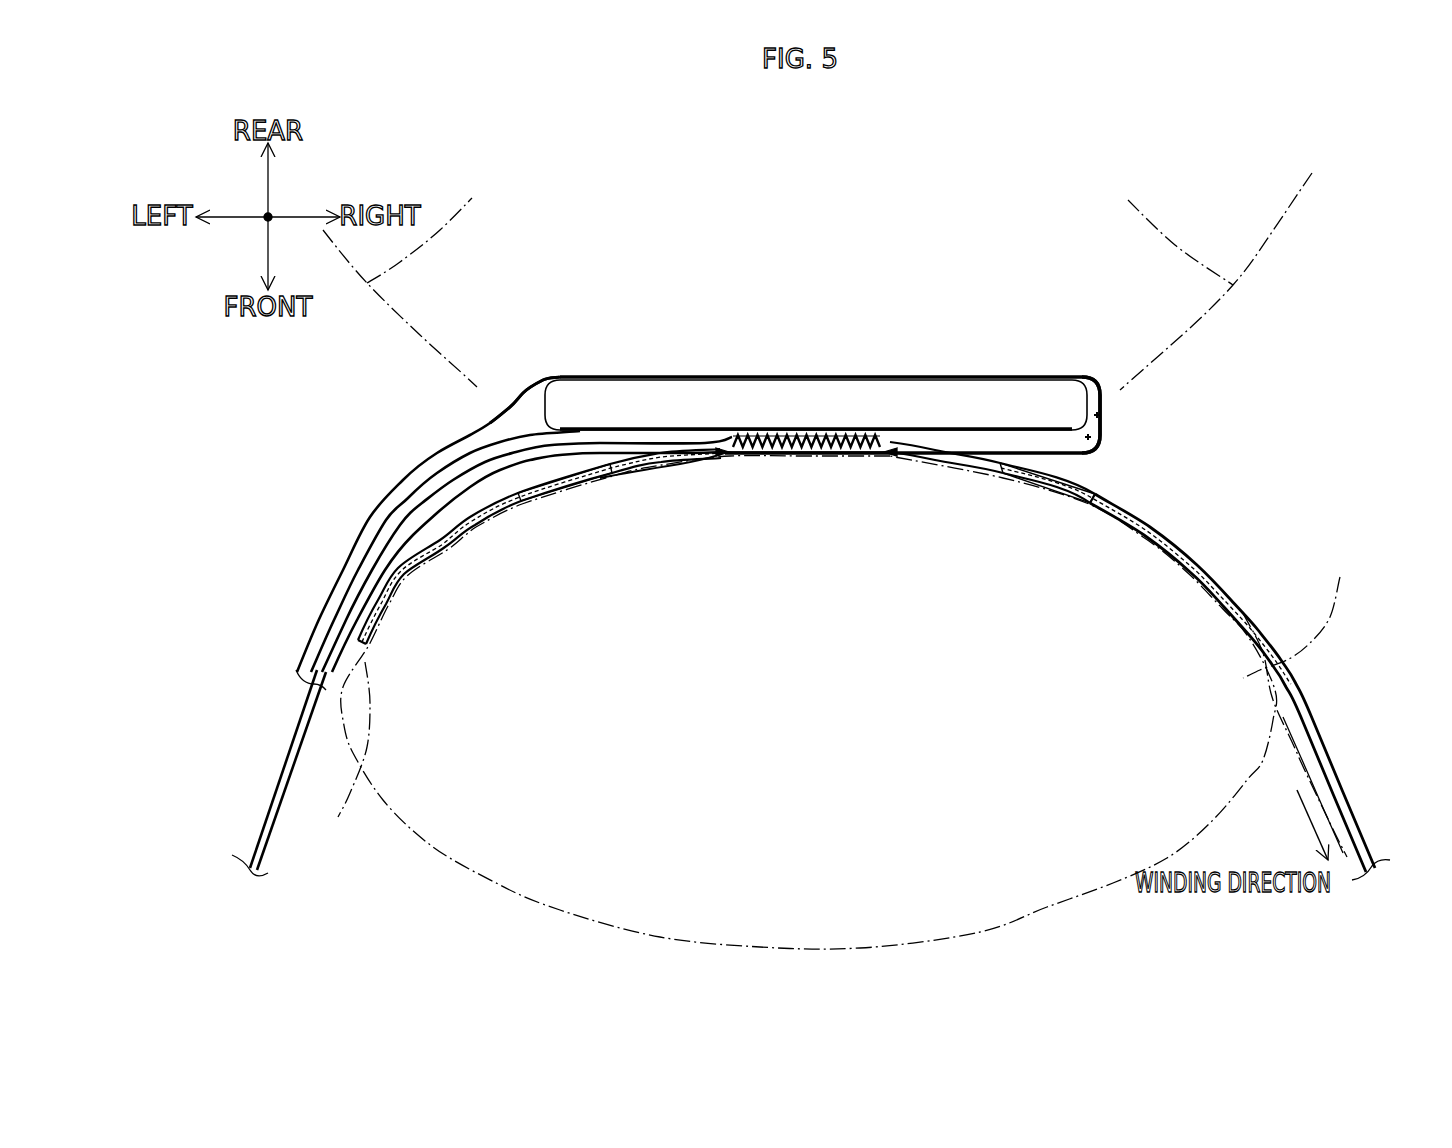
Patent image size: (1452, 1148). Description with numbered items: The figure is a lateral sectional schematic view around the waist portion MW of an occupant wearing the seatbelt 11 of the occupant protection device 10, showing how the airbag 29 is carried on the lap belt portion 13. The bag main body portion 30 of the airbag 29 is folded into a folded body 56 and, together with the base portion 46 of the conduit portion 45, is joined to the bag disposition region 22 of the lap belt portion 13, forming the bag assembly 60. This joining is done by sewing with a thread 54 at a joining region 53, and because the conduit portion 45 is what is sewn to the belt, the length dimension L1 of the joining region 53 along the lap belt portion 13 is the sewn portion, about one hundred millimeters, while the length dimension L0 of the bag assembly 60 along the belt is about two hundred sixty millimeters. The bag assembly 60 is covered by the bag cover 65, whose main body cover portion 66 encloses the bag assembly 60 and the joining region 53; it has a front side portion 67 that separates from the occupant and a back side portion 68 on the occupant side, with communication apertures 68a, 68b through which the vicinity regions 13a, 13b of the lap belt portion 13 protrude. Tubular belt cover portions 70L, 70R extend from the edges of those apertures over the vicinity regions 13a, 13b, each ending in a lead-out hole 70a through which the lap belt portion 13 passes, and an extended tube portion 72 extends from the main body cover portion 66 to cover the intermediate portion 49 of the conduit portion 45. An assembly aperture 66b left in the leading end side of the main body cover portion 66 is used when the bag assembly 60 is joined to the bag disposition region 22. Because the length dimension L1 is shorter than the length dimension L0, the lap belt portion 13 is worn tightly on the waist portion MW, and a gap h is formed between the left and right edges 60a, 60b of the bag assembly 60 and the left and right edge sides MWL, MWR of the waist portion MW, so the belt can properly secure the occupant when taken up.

The occupant protection device 10 is at (1267, 287).
The seatbelt 11 is at (1323, 750).
The lap belt portion 13 is at (1252, 687).
The vicinity region 13a is at (962, 460).
The vicinity region 13b is at (653, 468).
The bag disposition region 22 is at (811, 458).
The airbag 29 is at (970, 232).
The bag main body portion 30 is at (991, 393).
The conduit portion 45 is at (1043, 433).
The base portion 46 is at (678, 433).
The intermediate portion 49 is at (317, 690).
The joining region 53 is at (848, 465).
The thread 54 is at (780, 465).
The folded body 56 is at (608, 392).
The bag assembly 60 is at (855, 331).
The left edge 60a is at (543, 363).
The right edge 60b is at (1098, 363).
The bag cover 65 is at (956, 363).
The main body cover portion 66 is at (907, 378).
The assembly aperture 66b is at (1110, 413).
The front side portion 67 is at (1107, 392).
The back side portion 68 is at (1090, 462).
The communication aperture 68a is at (707, 463).
The communication aperture 68b is at (902, 465).
The lead-out hole 70a is at (503, 510).
The belt cover portion 70L is at (800, 557).
The belt cover portion 70R is at (1052, 492).
The extended tube portion 72 is at (323, 607).
The gap h is at (528, 467).
The length dimension of bag assembly L0 is at (544, 330).
The length dimension of joining region L1 is at (732, 430).
The waist portion MW is at (1170, 862).
The left edge of waist portion MWL is at (335, 753).
The right edge of waist portion MWR is at (1308, 614).